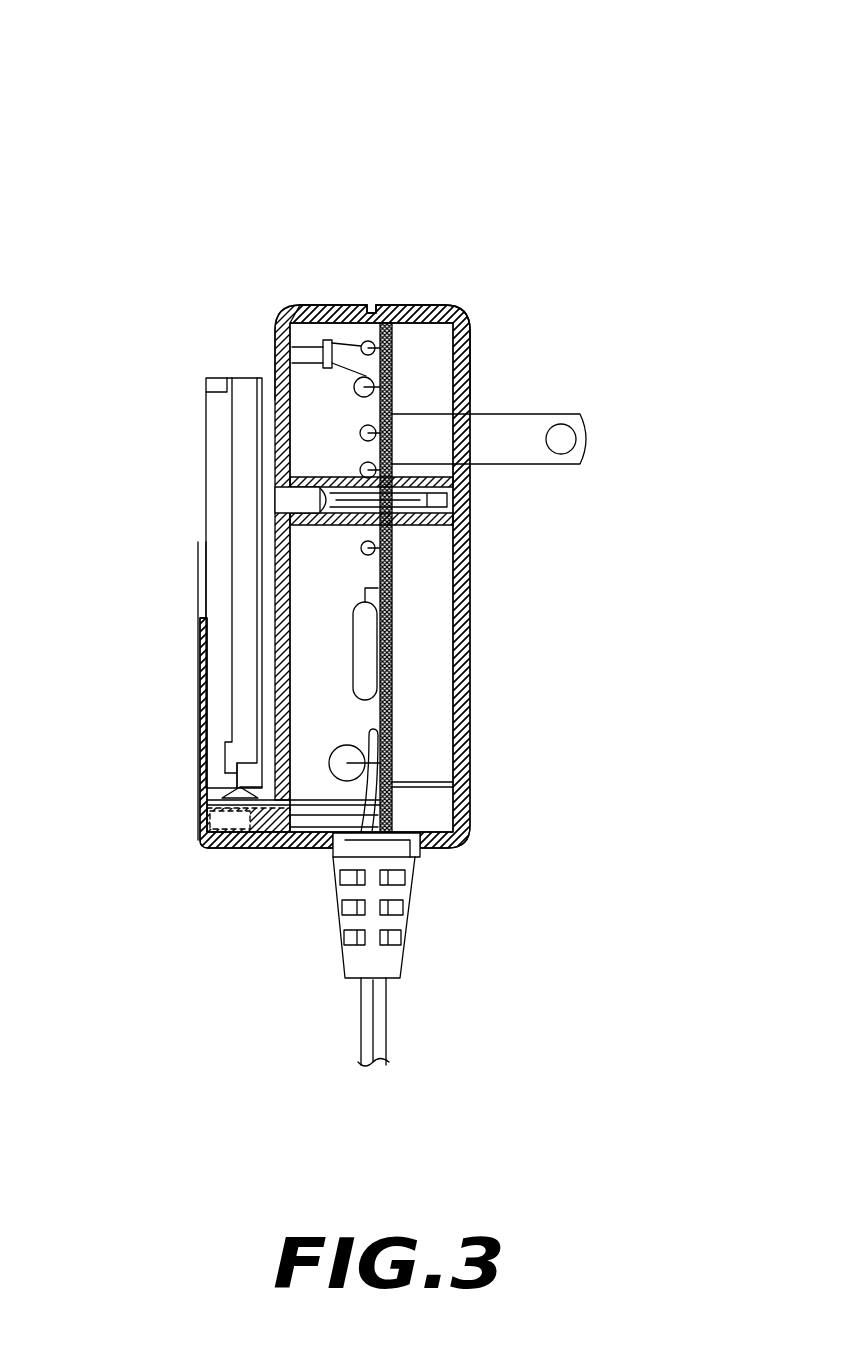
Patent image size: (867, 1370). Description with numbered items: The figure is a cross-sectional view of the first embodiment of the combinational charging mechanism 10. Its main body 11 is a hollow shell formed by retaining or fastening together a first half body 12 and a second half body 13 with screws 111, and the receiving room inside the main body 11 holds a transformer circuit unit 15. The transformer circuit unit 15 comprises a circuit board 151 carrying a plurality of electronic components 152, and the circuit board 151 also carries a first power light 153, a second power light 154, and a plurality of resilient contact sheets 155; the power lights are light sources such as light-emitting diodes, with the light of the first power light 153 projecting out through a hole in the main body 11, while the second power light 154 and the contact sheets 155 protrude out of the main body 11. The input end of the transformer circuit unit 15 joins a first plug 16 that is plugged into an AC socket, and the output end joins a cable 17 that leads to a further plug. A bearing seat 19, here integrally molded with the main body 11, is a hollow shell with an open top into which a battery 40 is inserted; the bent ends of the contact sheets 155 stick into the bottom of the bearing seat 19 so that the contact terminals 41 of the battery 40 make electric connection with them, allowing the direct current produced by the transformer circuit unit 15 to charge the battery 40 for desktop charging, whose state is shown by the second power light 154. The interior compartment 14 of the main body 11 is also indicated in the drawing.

The combinational charging mechanism 10 is at (286, 128).
The main body 11 is at (366, 265).
The first half body 12 is at (320, 305).
The second half body 13 is at (410, 305).
The housing interior compartment 14 is at (430, 670).
The transformer circuit unit 15 is at (402, 707).
The first plug 16 is at (582, 437).
The cable 17 is at (378, 1018).
The bearing seat 19 is at (200, 663).
The battery 40 is at (212, 441).
The contact terminals 41 is at (237, 785).
The screws 111 is at (447, 500).
The circuit board 151 is at (392, 563).
The electronic components 152 is at (353, 389).
The first power light 153 is at (303, 347).
The second power light 154 is at (200, 818).
The resilient contact sheets 155 is at (228, 791).